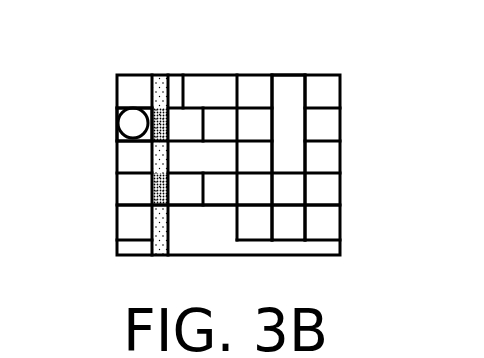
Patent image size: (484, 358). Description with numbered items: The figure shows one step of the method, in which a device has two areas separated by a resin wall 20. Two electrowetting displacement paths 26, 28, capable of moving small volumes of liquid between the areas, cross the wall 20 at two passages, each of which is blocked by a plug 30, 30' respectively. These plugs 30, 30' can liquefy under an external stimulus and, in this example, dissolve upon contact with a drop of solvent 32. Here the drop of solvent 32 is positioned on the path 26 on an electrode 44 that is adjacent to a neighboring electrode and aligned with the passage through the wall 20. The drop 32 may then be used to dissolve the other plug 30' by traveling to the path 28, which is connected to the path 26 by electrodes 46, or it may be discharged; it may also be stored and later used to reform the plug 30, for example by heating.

The resin wall 20 is at (161, 76).
The plug 30 is at (187, 78).
The plug 30' is at (100, 194).
The electrowetting displacement path 26 is at (207, 98).
The electrode 44 is at (118, 108).
The drop of solvent 32 is at (120, 129).
The electrowetting displacement path 28 is at (194, 214).
The electrodes 46 is at (258, 160).